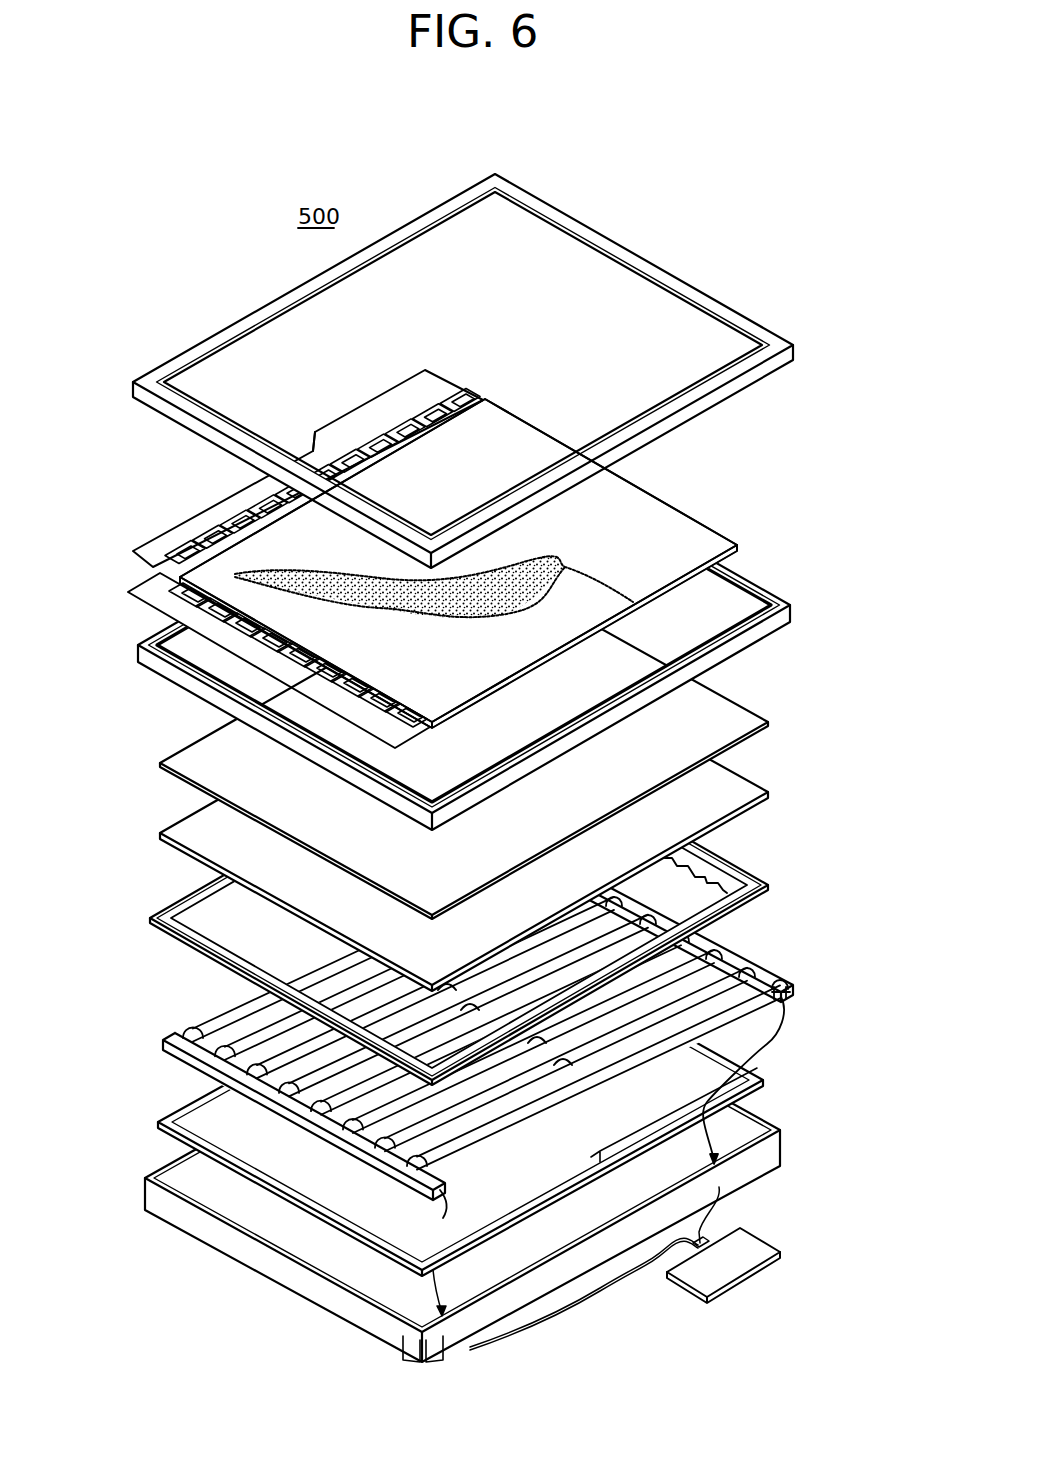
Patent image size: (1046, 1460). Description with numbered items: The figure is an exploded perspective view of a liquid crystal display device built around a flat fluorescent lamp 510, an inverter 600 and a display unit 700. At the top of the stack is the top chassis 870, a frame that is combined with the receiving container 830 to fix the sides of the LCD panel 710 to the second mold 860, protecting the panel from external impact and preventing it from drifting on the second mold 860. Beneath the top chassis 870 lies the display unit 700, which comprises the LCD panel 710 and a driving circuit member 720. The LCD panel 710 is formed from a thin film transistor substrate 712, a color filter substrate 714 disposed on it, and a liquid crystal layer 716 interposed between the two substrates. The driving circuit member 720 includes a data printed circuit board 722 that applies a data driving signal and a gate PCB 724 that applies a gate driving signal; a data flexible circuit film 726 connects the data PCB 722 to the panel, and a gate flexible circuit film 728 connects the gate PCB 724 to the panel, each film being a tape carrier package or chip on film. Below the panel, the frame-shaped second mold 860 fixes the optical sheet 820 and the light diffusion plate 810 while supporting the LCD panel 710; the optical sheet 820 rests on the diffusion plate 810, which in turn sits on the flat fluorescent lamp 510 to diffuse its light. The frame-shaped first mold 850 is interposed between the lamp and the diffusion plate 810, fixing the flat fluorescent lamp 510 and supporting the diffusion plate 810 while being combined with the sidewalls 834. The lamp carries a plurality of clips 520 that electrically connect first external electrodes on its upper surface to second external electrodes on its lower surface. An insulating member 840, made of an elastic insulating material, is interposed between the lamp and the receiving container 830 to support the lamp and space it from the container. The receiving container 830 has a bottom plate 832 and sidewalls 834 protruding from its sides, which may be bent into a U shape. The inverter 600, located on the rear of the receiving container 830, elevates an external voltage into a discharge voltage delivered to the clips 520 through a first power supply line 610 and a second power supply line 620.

The top chassis 870 is at (187, 337).
The display unit 700 is at (165, 505).
The LCD panel 710 is at (512, 563).
The thin film transistor (TFT) substrate 712 is at (515, 654).
The color filter substrate 714 is at (650, 580).
The liquid crystal layer 716 is at (565, 566).
The driving circuit member 720 is at (255, 453).
The data printed circuit board 722 is at (332, 430).
The gate PCB 724 is at (157, 604).
The data flexible circuit film 726 is at (387, 425).
The gate flexible circuit film 728 is at (172, 636).
The second mold 860 is at (785, 637).
The optical sheet 820 is at (168, 742).
The light diffusion plate 810 is at (175, 808).
The first mold 850 is at (172, 890).
The flat fluorescent lamp 510 is at (440, 1039).
The clips 520 is at (766, 975).
The insulating member 840 is at (170, 1100).
The receiving container 830 is at (434, 1169).
The bottom plate 832 is at (258, 1215).
The sidewalls 834 is at (278, 1255).
The first power supply line 610 is at (590, 1293).
The second power supply line 620 is at (718, 1215).
The inverter 600 is at (720, 1278).